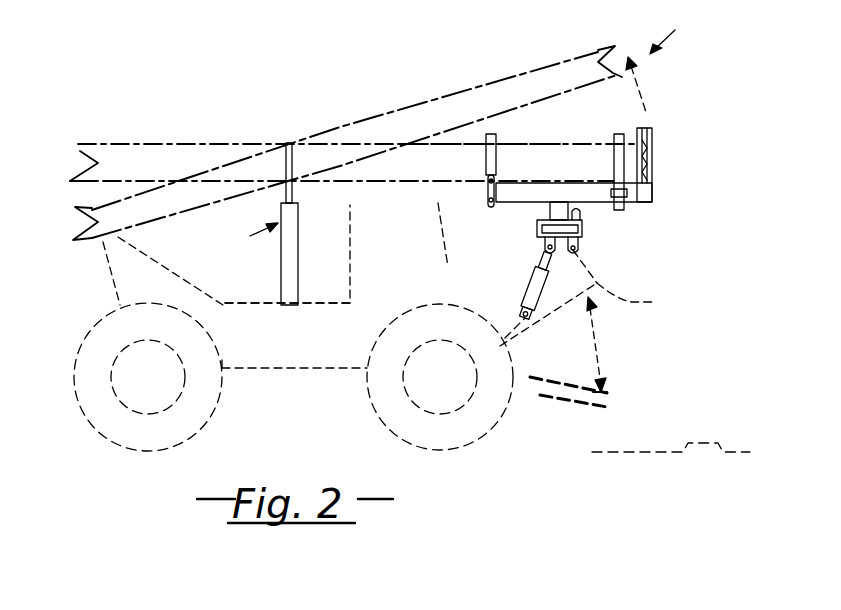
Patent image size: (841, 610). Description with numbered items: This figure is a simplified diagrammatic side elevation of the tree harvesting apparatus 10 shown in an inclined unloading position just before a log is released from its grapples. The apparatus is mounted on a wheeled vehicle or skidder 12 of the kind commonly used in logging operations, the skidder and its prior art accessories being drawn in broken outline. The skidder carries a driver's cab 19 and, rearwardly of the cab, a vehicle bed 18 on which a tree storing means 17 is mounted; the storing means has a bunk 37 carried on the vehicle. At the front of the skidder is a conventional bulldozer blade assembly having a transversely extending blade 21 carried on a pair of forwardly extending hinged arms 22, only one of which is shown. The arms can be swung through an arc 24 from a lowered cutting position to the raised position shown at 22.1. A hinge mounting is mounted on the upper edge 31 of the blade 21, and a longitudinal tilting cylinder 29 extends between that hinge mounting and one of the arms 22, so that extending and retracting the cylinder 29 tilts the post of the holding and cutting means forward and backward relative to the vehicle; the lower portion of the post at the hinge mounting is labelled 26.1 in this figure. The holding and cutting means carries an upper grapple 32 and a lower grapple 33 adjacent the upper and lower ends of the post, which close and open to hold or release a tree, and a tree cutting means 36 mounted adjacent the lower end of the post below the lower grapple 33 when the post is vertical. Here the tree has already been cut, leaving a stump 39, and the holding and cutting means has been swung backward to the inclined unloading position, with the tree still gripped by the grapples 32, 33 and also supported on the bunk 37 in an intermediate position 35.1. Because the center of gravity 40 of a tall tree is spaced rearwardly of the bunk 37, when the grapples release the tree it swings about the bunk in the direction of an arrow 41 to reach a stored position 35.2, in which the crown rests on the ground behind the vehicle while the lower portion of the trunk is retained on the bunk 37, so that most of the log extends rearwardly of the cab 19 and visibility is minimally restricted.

The tree harvesting apparatus 10 is at (676, 34).
The wheeled vehicle or skidder 12 is at (290, 368).
The tree storing means 17 is at (251, 236).
The vehicle bed 18 is at (250, 277).
The driver's cab 19 is at (440, 212).
The blade 21 is at (585, 260).
The hinged arms 22 is at (543, 398).
The raised position of the arms 22.1 is at (649, 299).
The arc 24 is at (600, 348).
The hitch mount 26.1 is at (596, 205).
The longitudinal tilting cylinder 29 is at (543, 264).
The upper edge of the blade 31 is at (585, 245).
The upper grapple 32 is at (494, 133).
The lower grapple 33 is at (624, 130).
The intermediate position of the tree 35.1 is at (552, 140).
The stored position of the tree 35.2 is at (458, 113).
The tree cutting means 36 is at (650, 150).
The bunk 37 is at (294, 193).
The stump 39 is at (698, 441).
The center of gravity of the tree 40 is at (157, 153).
The arrow 41 is at (640, 80).